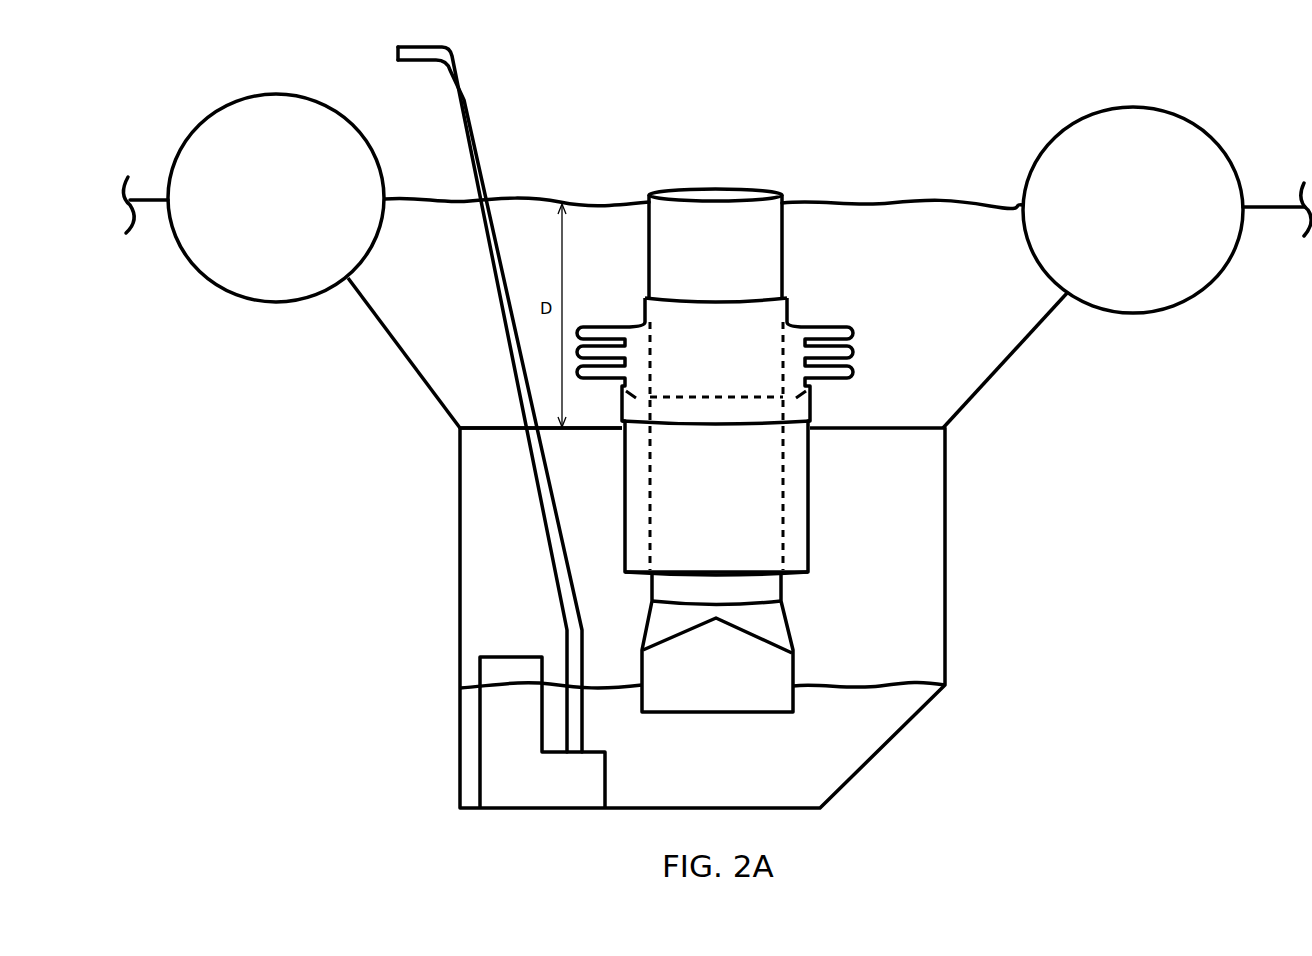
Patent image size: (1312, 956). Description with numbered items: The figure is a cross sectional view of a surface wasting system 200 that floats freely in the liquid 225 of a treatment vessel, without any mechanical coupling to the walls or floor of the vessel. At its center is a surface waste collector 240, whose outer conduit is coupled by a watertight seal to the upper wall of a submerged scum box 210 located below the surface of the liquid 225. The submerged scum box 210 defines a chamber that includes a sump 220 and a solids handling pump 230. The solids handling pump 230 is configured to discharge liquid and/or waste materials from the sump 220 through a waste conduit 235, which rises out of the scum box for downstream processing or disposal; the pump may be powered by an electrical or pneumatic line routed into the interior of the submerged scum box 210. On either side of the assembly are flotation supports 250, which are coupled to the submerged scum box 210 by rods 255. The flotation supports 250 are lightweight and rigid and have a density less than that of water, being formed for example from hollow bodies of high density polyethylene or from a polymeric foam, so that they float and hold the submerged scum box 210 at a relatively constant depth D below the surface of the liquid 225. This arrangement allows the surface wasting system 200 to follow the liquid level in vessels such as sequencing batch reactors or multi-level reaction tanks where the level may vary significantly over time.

The surface wasting system 200 is at (965, 70).
The submerged scum box 210 is at (945, 610).
The sump 220 is at (702, 724).
The liquid 225 is at (448, 471).
The solids handling pump 230 is at (542, 732).
The waste conduit 235 is at (470, 85).
The surface waste collector 240 is at (847, 297).
The flotation supports 250 is at (705, 203).
The rods 255 is at (382, 328).